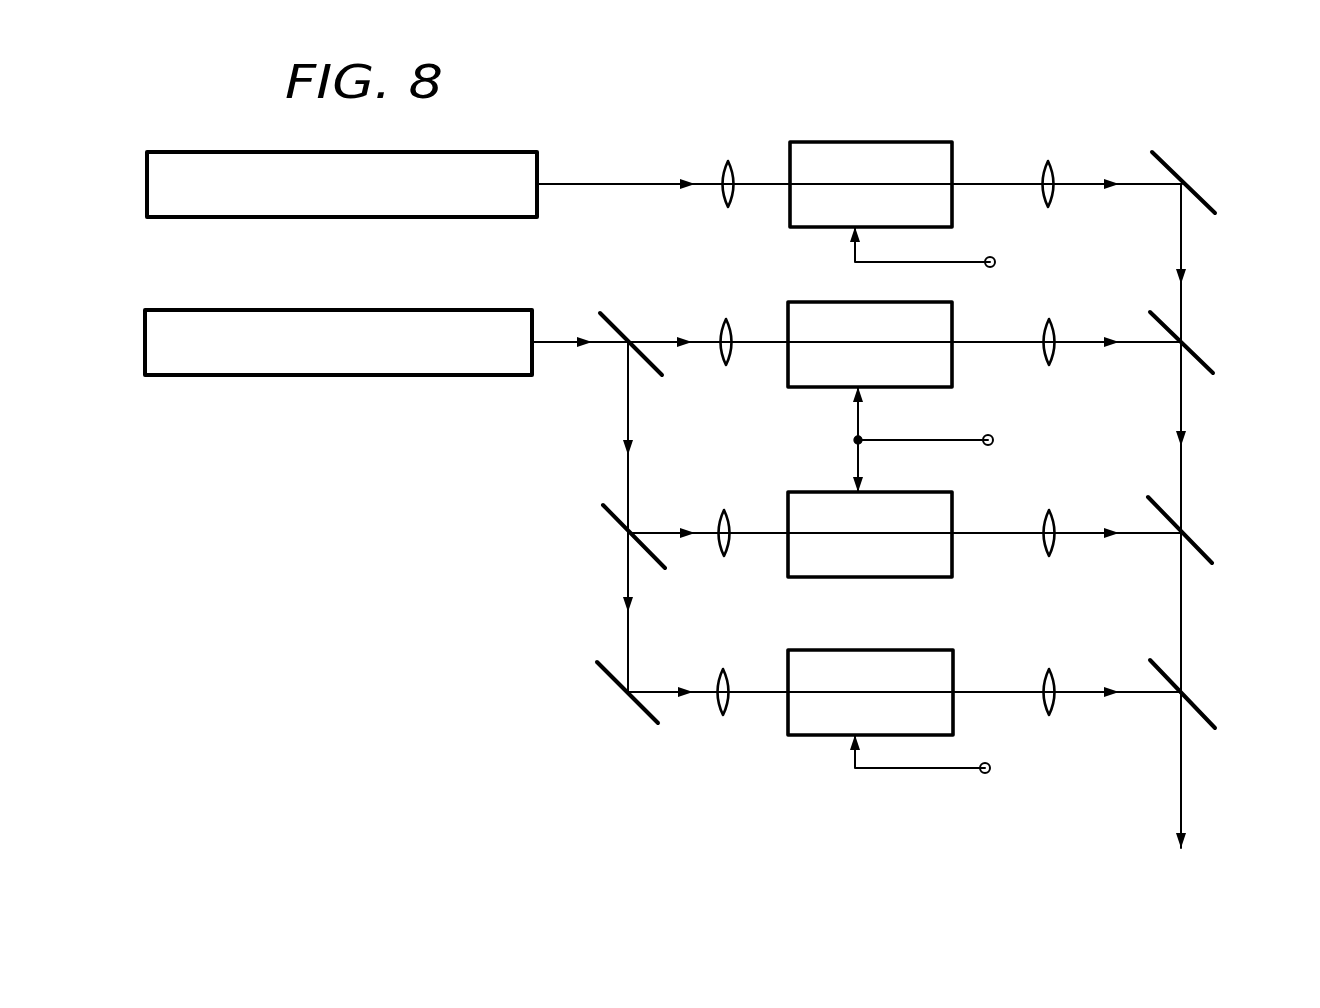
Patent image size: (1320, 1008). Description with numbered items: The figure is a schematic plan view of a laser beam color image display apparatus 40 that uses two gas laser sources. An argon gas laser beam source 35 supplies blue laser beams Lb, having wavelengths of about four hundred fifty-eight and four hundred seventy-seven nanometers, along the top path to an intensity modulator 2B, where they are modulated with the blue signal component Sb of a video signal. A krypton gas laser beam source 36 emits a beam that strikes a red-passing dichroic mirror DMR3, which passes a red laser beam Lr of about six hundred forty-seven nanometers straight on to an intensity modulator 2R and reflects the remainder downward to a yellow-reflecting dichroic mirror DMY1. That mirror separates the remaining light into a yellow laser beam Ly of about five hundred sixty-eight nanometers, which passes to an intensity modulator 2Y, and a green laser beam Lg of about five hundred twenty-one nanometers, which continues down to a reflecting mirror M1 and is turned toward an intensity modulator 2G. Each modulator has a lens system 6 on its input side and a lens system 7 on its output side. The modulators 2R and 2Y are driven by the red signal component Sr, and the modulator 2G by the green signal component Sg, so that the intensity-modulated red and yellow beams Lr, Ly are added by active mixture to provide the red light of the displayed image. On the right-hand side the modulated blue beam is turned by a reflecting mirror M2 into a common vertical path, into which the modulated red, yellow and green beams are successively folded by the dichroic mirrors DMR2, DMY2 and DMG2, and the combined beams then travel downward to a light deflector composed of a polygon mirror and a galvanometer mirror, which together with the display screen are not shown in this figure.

The laser beam color image display apparatus 40 is at (102, 114).
The argon gas laser beam source 35 is at (385, 217).
The krypton gas laser beam source 36 is at (385, 375).
The lens system 6 is at (733, 162).
The lens system 7 is at (1050, 162).
The intensity modulator 2B is at (902, 142).
The intensity modulator 2R is at (820, 387).
The intensity modulator 2Y is at (877, 577).
The intensity modulator 2G is at (828, 735).
The blue signal component Sb is at (945, 253).
The red signal component Sr is at (942, 439).
The green signal component Sg is at (943, 761).
The reflecting mirror M2 is at (1213, 193).
The reflecting mirror M1 is at (610, 680).
The red-passing dichroic mirror DMR3 is at (615, 328).
The red-reflecting dichroic mirror DMR2 is at (1205, 362).
The yellow-reflecting dichroic mirror DMY1 is at (610, 520).
The yellow-reflecting dichroic mirror DMY2 is at (1203, 550).
The green-reflecting dichroic mirror DMG2 is at (1208, 712).
The blue laser beams Lb is at (613, 186).
The red laser beam Lr is at (668, 346).
The yellow laser beam Ly is at (668, 537).
The green laser beam Lg is at (665, 696).